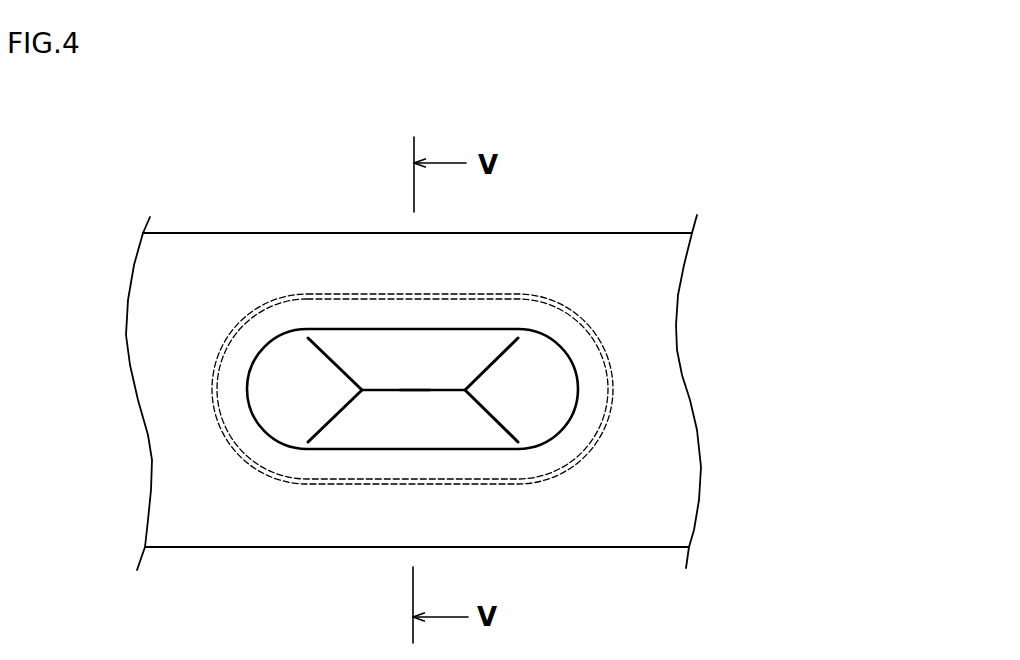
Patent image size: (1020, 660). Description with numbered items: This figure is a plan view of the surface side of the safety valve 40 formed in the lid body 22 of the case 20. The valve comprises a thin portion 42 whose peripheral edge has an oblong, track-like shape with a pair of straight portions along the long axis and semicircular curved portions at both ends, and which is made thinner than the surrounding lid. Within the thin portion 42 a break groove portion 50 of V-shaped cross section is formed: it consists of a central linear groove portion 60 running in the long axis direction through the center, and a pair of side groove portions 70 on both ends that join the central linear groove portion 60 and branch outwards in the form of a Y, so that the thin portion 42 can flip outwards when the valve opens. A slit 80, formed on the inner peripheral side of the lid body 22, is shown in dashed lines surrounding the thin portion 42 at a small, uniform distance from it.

The case 20 is at (637, 202).
The lid body 22 is at (577, 243).
The safety valve 40 is at (377, 327).
The thin portion 42 is at (370, 432).
The break groove portion 50 is at (455, 403).
The central linear groove portion 60 is at (417, 390).
The side groove portions 70 is at (332, 362).
The slit 80 is at (507, 293).